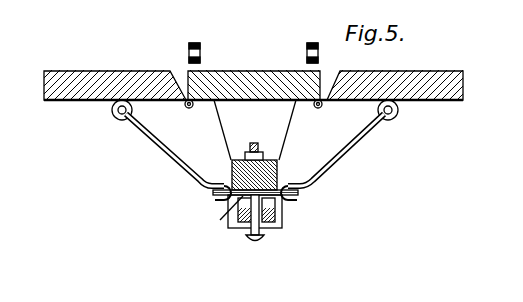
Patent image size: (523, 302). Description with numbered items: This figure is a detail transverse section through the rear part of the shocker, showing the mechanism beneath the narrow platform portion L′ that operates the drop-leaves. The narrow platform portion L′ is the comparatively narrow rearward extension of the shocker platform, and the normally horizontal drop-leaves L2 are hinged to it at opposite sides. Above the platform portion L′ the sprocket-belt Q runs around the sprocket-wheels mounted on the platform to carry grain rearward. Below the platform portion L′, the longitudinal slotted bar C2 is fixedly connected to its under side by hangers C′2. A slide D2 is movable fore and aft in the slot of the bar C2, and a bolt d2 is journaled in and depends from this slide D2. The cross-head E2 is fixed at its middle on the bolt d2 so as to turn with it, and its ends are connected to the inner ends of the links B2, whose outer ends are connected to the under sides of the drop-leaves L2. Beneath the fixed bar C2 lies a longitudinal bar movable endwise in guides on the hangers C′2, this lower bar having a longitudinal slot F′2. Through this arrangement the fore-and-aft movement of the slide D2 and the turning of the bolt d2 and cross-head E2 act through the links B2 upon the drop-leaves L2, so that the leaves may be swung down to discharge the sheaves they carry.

The drop-leaves L2 is at (417, 95).
The narrow platform portion L′ is at (261, 84).
The sprocket-belt Q is at (306, 50).
The longitudinal slotted bar C2 is at (286, 137).
The hangers C′2 is at (278, 175).
The cross-head E2 is at (300, 194).
The longitudinal slot F′2 is at (283, 220).
The bolt d2 is at (259, 236).
The slide D2 is at (216, 218).
The links B2 is at (166, 150).